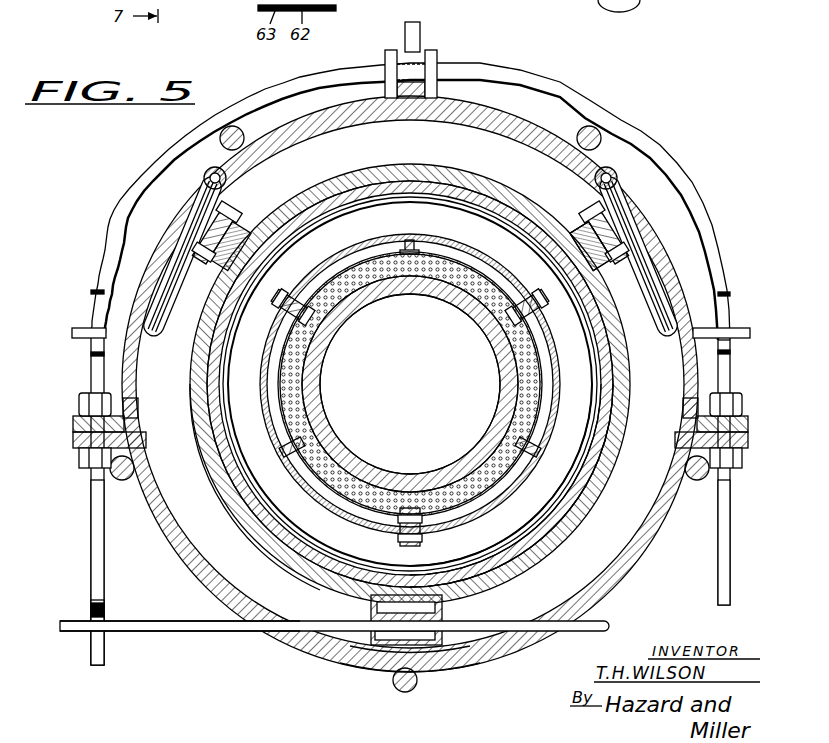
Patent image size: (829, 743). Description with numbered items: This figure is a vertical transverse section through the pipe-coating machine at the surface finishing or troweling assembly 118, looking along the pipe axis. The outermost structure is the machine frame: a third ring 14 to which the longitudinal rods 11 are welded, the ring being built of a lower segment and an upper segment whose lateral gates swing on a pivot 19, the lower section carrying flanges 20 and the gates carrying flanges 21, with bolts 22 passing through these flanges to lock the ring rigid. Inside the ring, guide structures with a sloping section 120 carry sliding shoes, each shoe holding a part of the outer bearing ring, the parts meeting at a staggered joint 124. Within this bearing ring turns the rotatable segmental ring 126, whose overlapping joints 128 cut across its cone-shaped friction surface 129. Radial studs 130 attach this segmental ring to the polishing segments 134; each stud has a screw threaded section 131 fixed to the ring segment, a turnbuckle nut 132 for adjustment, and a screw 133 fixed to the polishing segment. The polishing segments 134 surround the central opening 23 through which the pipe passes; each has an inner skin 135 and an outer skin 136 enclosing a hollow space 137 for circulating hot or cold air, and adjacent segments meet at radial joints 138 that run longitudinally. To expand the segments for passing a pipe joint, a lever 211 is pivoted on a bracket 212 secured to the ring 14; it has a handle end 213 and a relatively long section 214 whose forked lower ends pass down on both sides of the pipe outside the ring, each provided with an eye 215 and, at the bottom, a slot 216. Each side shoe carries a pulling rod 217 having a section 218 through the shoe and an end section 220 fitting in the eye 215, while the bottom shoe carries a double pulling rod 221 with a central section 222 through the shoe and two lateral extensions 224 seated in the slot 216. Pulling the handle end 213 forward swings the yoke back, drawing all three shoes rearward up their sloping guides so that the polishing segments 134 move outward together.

The longitudinal rods 11 is at (598, 130).
The third ring 14 is at (528, 107).
The pivot 19 is at (204, 178).
The flanges 20 is at (750, 440).
The flanges 21 is at (750, 425).
The bolts 22 is at (736, 405).
The central bore 23 is at (322, 413).
The surface finishing or troweling assembly 118 is at (228, 538).
The sloping section 120 is at (392, 645).
The staggered joint 124 is at (404, 168).
The rotatable segmental ring 126 is at (520, 527).
The overlapping joints 128 is at (586, 472).
The cone-shaped friction surface 129 is at (222, 455).
The radial studs 130 is at (531, 292).
The screw threaded section 131 is at (622, 262).
The turnbuckle nut 132 is at (590, 266).
The screw 133 is at (498, 327).
The polishing segments 134 is at (502, 281).
The inner skin 135 is at (503, 360).
The outer skin 136 is at (362, 240).
The hollow space 137 is at (331, 280).
The radial joints 138 is at (414, 242).
The lever 211 is at (668, 150).
The bracket 212 is at (432, 62).
The handle end 213 is at (418, 36).
The relatively long section 214 is at (731, 520).
The eye 215 is at (726, 326).
The slot 216 is at (91, 653).
The pulling rod 217 is at (664, 322).
The section 218 is at (625, 258).
The end section 220 is at (750, 334).
The double pulling rod 221 is at (526, 619).
The central section 222 is at (500, 614).
The lateral extensions 224 is at (174, 627).